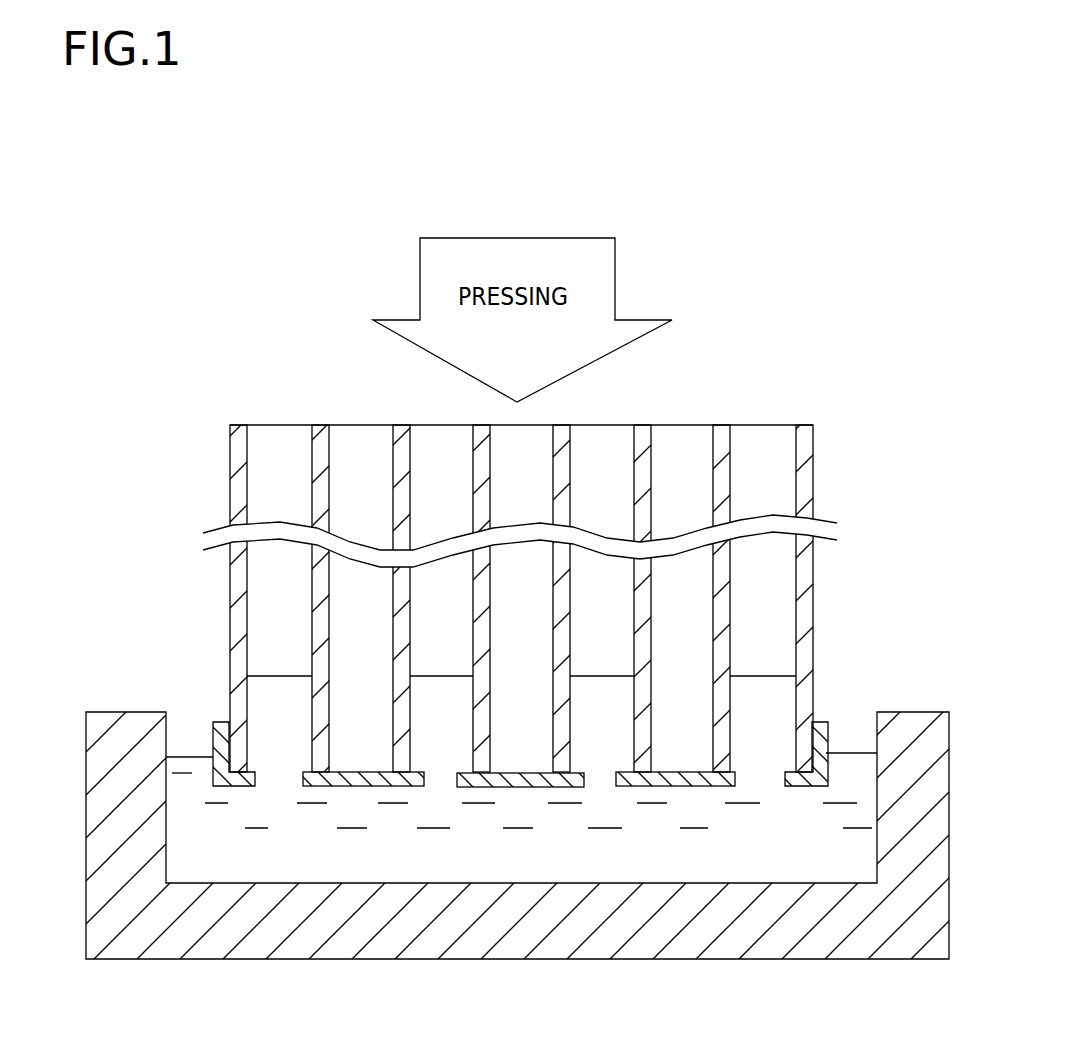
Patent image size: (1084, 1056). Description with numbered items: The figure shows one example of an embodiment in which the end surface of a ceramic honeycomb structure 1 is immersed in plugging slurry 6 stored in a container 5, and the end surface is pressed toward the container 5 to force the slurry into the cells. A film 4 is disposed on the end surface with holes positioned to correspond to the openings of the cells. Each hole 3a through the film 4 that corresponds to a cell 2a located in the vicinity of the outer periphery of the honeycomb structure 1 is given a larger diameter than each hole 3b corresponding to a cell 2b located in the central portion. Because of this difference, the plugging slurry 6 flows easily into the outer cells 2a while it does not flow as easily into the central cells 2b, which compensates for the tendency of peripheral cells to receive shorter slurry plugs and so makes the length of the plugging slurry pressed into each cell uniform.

The honeycomb structure 1 is at (525, 618).
The cell 2a is at (257, 583).
The cell 2b is at (420, 653).
The hole 3a is at (272, 780).
The hole 3b is at (438, 783).
The film 4 is at (527, 787).
The container 5 is at (558, 930).
The plugging slurry 6 is at (387, 870).